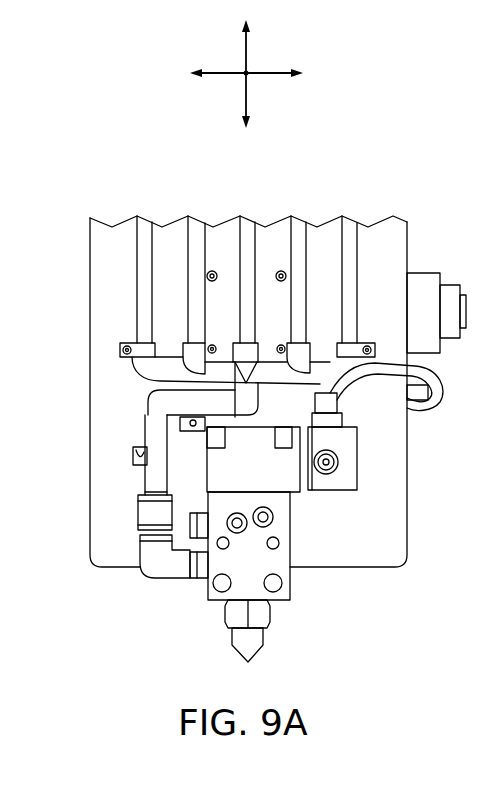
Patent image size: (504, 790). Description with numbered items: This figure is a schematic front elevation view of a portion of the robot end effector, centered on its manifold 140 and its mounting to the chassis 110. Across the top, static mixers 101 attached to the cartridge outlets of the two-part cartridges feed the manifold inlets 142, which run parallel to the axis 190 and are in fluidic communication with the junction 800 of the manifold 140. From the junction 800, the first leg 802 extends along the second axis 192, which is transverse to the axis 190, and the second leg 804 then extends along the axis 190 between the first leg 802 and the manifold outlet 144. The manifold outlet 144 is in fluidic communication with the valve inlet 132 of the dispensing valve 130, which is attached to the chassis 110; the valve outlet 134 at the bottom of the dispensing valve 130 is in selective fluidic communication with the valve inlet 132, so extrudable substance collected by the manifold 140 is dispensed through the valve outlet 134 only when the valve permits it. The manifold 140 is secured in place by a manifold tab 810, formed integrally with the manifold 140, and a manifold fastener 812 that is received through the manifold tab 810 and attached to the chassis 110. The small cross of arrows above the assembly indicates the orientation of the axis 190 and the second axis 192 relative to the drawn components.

The static mixers 101 is at (309, 236).
The chassis 110 is at (407, 518).
The dispensing valve 130 is at (291, 591).
The valve inlet 132 is at (135, 548).
The valve outlet 134 is at (234, 665).
The manifold 140 is at (143, 401).
The manifold inlets 142 is at (182, 336).
The manifold outlet 144 is at (128, 526).
The axis 190 is at (268, 73).
The second axis 192 is at (241, 95).
The junction 800 is at (257, 378).
The first leg 802 is at (218, 408).
The second leg 804 is at (137, 470).
The manifold tab 810 is at (124, 462).
The manifold fastener 812 is at (188, 423).